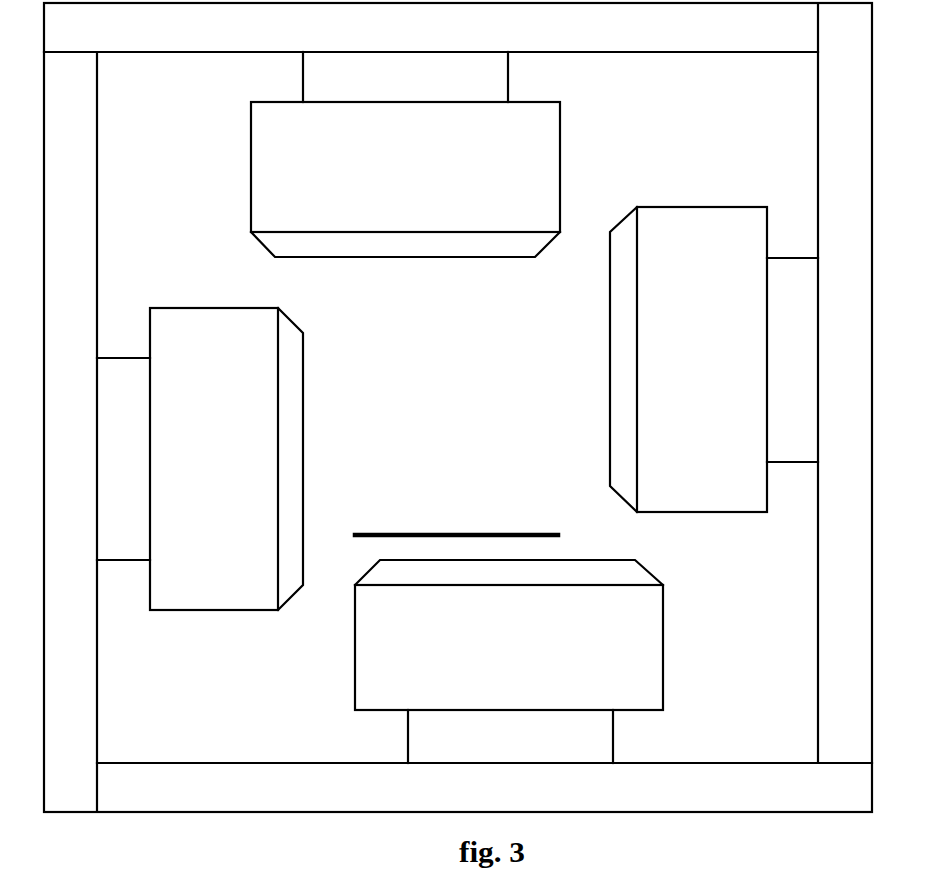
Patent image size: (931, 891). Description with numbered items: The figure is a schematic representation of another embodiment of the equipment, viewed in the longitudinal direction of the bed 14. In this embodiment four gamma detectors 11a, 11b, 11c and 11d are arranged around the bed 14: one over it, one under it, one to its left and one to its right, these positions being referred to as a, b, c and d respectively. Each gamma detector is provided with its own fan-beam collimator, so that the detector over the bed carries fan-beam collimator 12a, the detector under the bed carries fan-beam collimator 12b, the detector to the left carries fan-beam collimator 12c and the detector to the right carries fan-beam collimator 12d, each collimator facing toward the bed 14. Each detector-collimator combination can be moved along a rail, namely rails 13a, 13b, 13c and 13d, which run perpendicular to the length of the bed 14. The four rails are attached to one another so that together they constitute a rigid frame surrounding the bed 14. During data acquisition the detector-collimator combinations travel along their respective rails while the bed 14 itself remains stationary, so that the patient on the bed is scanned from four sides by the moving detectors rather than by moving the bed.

The gamma detector 11a is at (405, 142).
The gamma detector 11b is at (509, 674).
The gamma detector 11c is at (187, 459).
The gamma detector 11d is at (727, 359).
The fan-beam collimator 12a is at (405, 242).
The fan-beam collimator 12b is at (509, 571).
The fan-beam collimator 12c is at (288, 478).
The fan-beam collimator 12d is at (632, 362).
The rail 13a is at (431, 31).
The rail 13b is at (484, 782).
The rail 13c is at (73, 432).
The rail 13d is at (844, 383).
The bed 14 is at (456, 514).